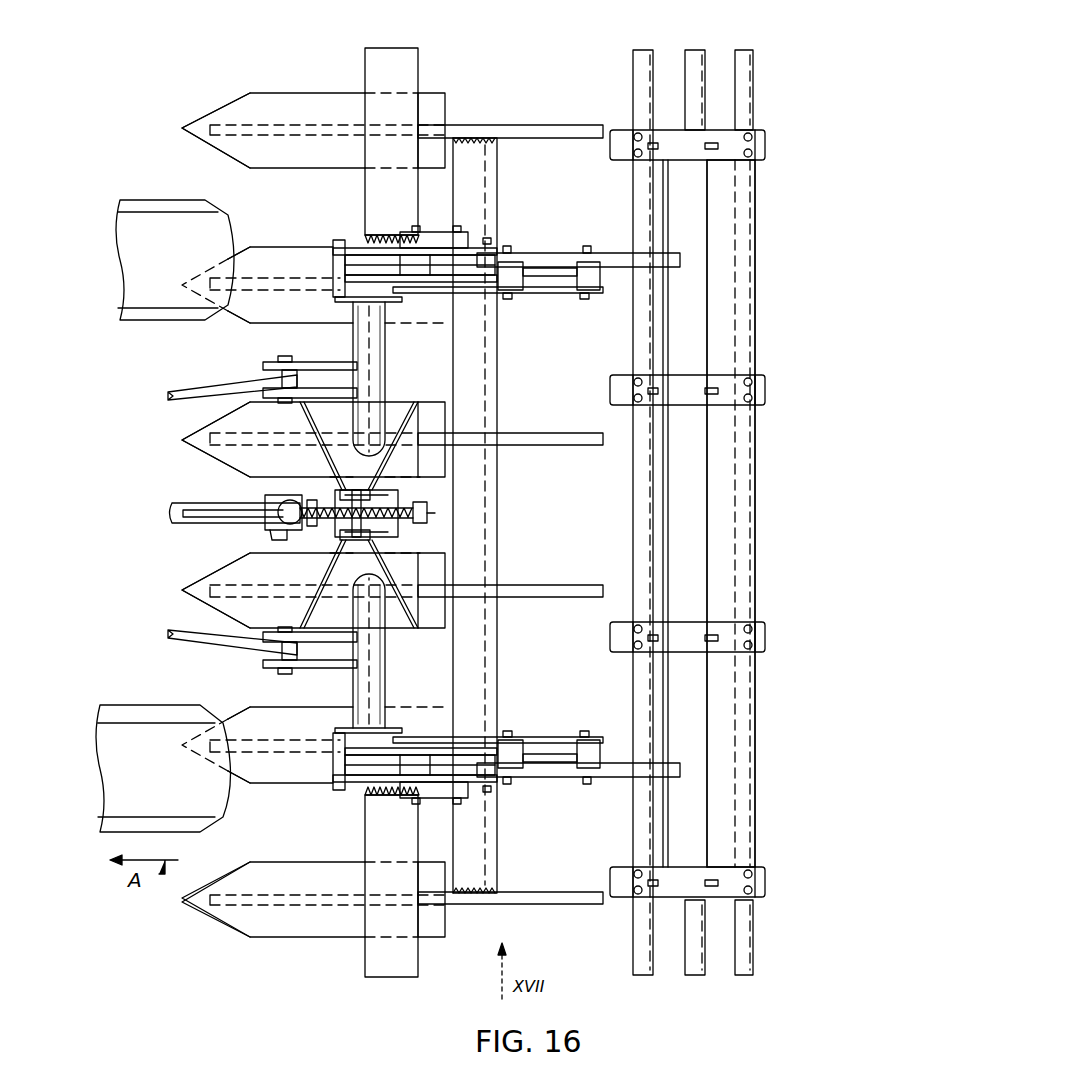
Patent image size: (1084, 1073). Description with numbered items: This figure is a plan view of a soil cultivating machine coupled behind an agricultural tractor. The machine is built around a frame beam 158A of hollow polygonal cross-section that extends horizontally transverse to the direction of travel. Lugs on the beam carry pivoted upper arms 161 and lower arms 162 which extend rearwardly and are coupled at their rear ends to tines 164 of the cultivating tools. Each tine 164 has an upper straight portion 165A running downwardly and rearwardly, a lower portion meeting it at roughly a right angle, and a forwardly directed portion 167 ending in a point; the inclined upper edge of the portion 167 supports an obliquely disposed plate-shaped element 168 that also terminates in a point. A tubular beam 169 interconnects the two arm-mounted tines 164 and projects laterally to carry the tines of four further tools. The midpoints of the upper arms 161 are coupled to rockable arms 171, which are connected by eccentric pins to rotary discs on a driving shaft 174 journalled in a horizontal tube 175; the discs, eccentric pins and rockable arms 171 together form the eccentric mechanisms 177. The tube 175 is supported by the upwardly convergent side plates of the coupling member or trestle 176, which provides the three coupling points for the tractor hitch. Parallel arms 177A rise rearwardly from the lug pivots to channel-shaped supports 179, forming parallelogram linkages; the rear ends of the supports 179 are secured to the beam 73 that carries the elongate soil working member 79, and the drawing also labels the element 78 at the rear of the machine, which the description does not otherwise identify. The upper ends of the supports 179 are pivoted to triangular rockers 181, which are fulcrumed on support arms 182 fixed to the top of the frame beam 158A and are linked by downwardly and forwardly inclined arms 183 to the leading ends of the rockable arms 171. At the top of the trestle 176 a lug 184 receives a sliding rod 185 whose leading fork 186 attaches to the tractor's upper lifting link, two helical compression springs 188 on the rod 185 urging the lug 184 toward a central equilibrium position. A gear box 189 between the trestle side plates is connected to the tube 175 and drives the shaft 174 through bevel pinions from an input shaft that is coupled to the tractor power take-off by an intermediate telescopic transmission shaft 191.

The frame beam 158A is at (416, 60).
The upper arms 161 is at (365, 238).
The lower arms 162 is at (525, 266).
The tine 164 is at (318, 72).
The upper straight portion 165A is at (560, 112).
The forwardly directed portion 167 is at (305, 147).
The plate-shaped element 168 is at (235, 107).
The tubular beam 169 is at (487, 192).
The rockable arms 171 is at (333, 262).
The driving shaft 174 is at (312, 338).
The horizontal tube 175 is at (358, 343).
The coupling member or trestle 176 is at (335, 453).
The eccentric mechanisms 177 is at (327, 304).
The arms 177A is at (508, 290).
The channel-shaped supports 179 is at (600, 253).
The triangular rockers 181 is at (485, 252).
The support arms 182 is at (387, 232).
The downwardly and forwardly inclined arm 183 is at (435, 232).
The lug 184 is at (352, 542).
The rod 185 is at (440, 520).
The fork 186 is at (275, 500).
The helical compression springs 188 is at (318, 542).
The gear box 189 is at (398, 497).
The intermediate telescopic transmission shaft 191 is at (200, 509).
The beam 73 is at (680, 179).
The rails 78 is at (693, 48).
The elongate soil working member 79 is at (785, 113).